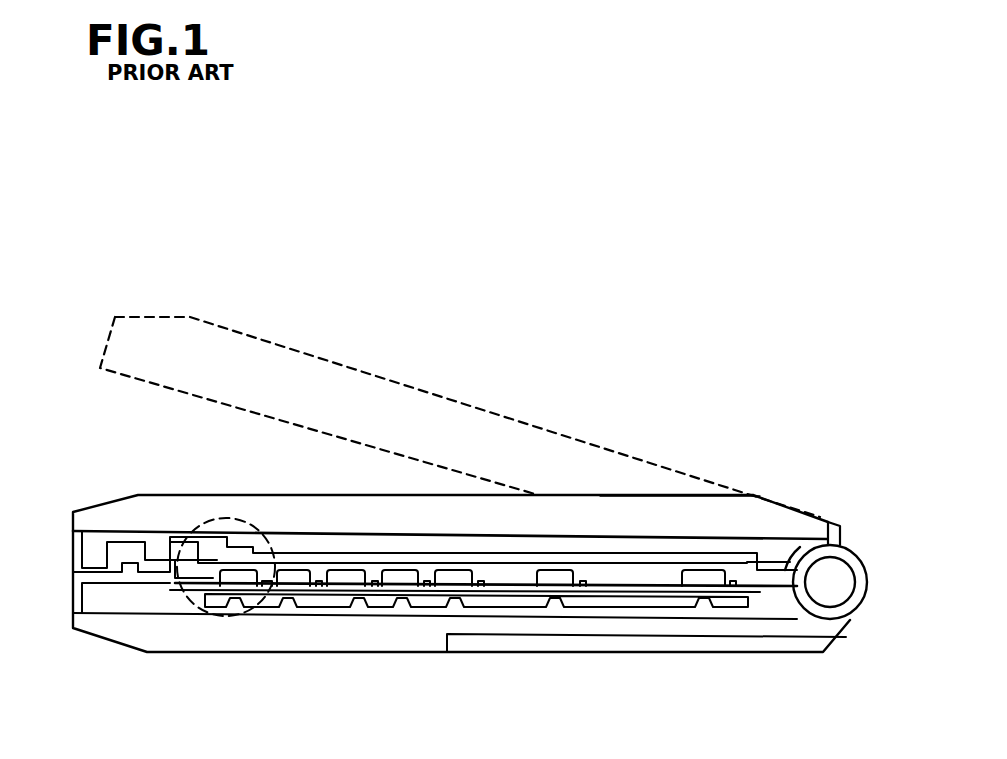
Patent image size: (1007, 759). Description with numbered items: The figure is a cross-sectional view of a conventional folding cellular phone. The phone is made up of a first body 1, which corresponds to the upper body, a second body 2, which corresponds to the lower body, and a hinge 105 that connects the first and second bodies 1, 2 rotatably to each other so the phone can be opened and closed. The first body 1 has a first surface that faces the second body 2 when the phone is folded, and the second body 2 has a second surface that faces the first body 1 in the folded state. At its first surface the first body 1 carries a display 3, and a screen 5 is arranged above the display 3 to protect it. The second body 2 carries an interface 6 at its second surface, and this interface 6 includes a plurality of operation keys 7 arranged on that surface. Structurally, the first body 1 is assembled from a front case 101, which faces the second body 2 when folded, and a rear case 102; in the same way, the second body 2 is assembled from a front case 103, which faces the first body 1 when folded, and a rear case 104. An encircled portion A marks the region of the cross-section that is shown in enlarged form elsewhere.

The first body 1 is at (453, 405).
The second body 2 is at (260, 642).
The display 3 is at (553, 497).
The screen 5 is at (292, 568).
The interface 6 is at (476, 642).
The operation keys 7 is at (290, 578).
The front case 101 is at (152, 570).
The rear case 102 is at (693, 497).
The front case 103 is at (130, 598).
The rear case 104 is at (663, 628).
The hinge 105 is at (826, 580).
The encircled portion A is at (219, 614).